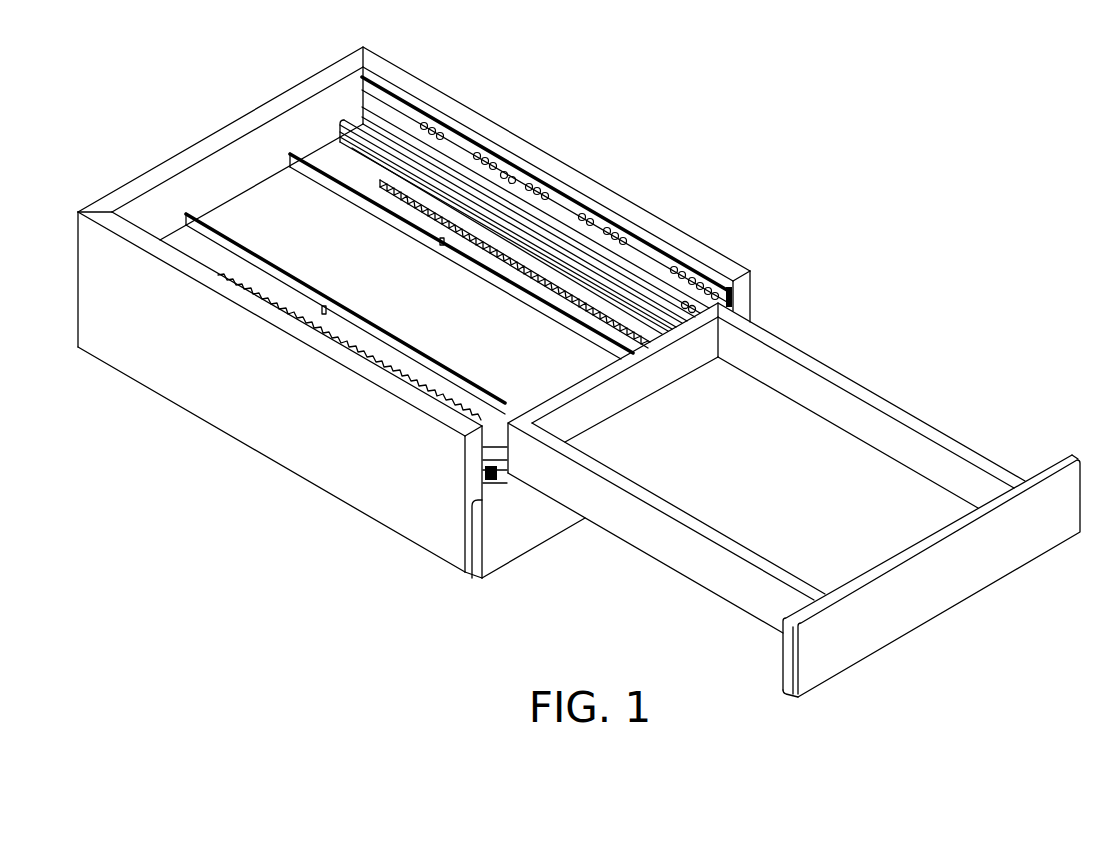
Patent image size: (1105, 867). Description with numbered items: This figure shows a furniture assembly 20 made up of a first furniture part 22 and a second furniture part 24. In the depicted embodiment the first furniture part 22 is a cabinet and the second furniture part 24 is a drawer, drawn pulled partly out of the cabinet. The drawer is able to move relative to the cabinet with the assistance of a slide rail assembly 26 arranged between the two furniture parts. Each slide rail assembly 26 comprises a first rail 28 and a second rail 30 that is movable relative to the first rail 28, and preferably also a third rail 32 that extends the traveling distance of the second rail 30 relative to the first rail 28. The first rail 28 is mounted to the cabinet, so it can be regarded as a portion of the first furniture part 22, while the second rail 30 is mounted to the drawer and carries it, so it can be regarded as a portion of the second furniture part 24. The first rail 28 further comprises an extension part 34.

The furniture assembly 20 is at (651, 82).
The first furniture part 22 is at (462, 115).
The second furniture part 24 is at (862, 412).
The slide rail assembly 26 is at (523, 156).
The first rail 28 is at (402, 115).
The second rail 30 is at (698, 306).
The third rail 32 is at (585, 257).
The extension part 34 is at (335, 152).